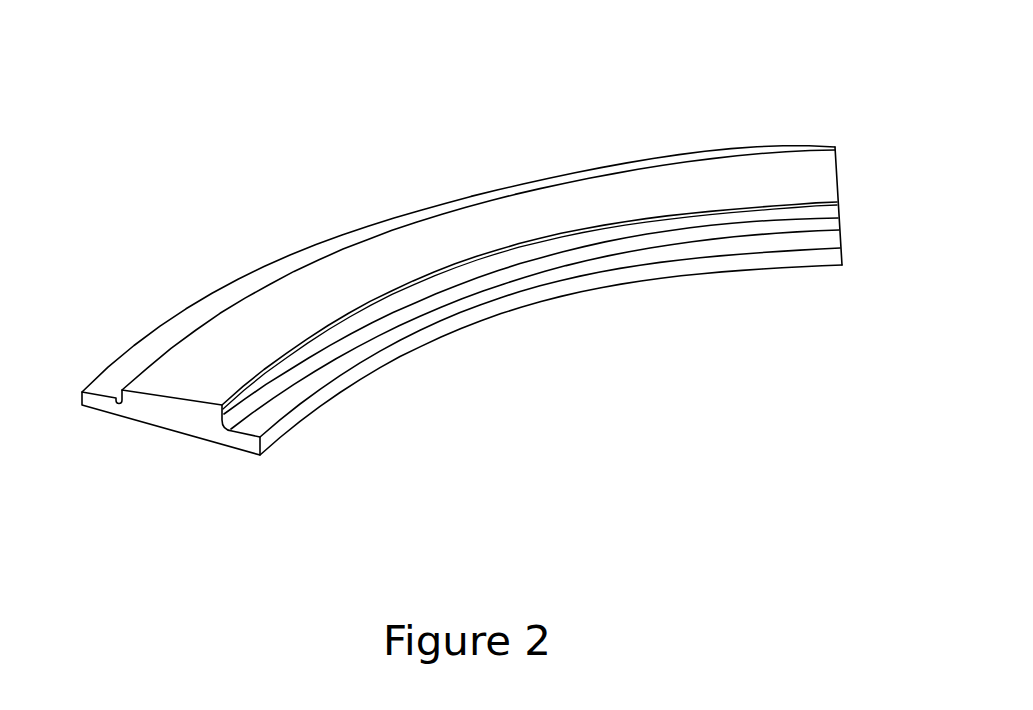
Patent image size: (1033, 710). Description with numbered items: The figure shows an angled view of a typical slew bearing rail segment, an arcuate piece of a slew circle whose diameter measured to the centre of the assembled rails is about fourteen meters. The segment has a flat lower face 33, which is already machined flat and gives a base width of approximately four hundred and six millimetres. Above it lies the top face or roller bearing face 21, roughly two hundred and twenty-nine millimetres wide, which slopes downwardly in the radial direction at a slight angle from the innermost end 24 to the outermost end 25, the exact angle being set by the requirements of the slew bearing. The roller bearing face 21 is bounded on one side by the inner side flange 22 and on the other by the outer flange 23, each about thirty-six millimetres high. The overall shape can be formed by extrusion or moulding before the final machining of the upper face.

The roller bearing face 21 is at (529, 239).
The inner side flange 22 is at (588, 244).
The outer flange 23 is at (436, 269).
The innermost end 24 is at (531, 324).
The outermost end 25 is at (478, 231).
The lower face 33 is at (196, 496).